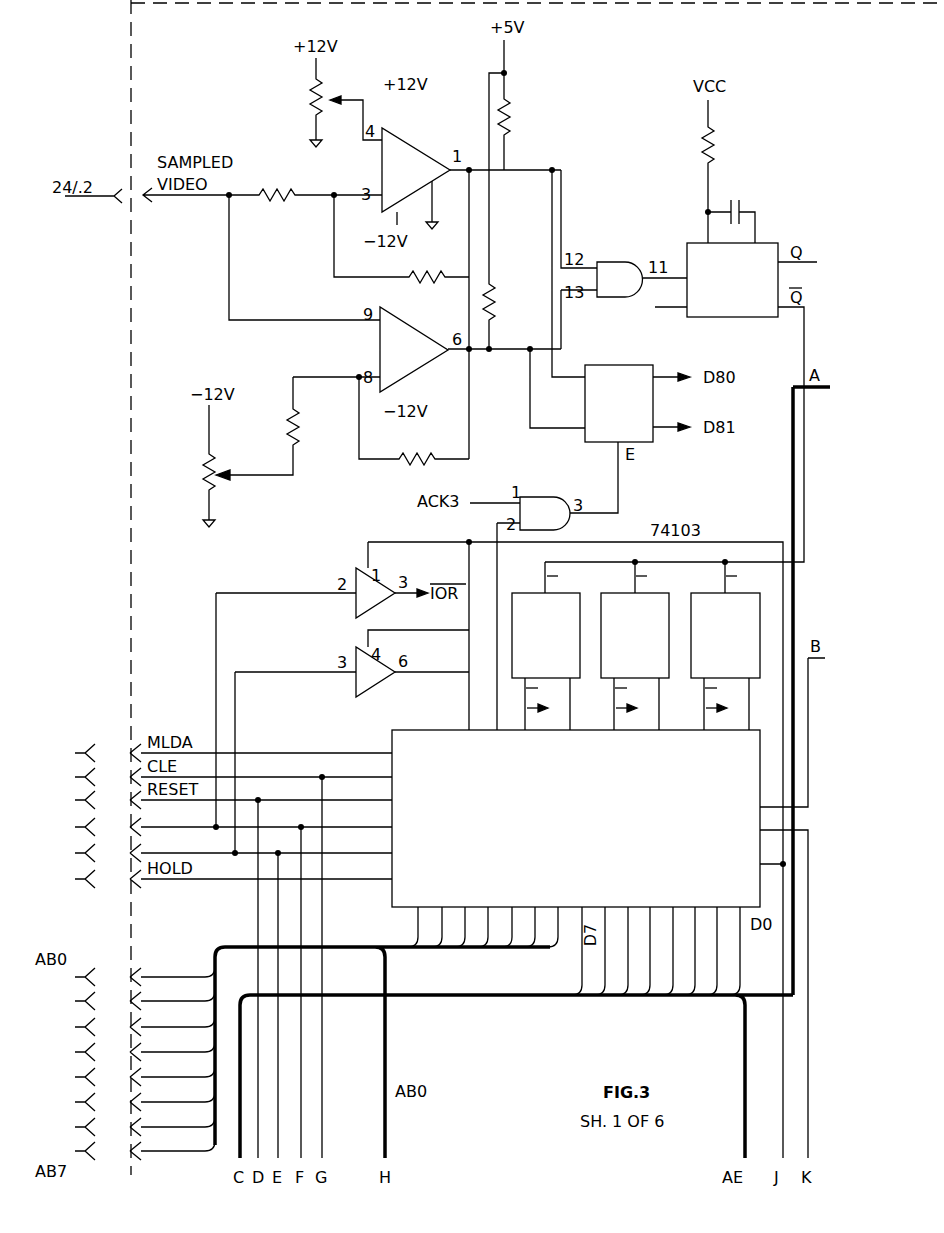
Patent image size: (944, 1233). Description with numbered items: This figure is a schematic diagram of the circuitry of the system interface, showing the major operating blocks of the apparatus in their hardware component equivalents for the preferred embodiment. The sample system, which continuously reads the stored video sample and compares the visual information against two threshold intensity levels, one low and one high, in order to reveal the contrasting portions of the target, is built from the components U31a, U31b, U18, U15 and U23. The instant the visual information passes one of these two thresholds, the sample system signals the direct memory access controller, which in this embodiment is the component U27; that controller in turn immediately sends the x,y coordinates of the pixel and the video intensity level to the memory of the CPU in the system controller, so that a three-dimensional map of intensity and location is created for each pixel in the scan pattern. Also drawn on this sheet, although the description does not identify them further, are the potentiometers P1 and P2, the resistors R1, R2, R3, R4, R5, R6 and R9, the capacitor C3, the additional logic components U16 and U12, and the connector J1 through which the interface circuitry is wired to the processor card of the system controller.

The potentiometer 10K (offset adjust) P1 is at (325, 102).
The potentiometer 10K (offset adjust) P2 is at (228, 466).
The resistor 1M (feedback) R1 is at (427, 275).
The resistor 22K (input) R2 is at (276, 197).
The resistor 1M (feedback) R3 is at (417, 460).
The resistor 22K R4 is at (283, 426).
The resistor 560 (pull-up) R5 is at (523, 116).
The resistor 560 (pull-up) R6 is at (503, 310).
The resistor 18K (timing) R9 is at (726, 145).
The capacitor 100PF (timing) C3 is at (750, 209).
The sample system component U31a is at (416, 170).
The sample system component U31b is at (414, 349).
The sample system component U18 is at (581, 380).
The sample system component U15 is at (732, 291).
The sample system component U23 is at (619, 403).
The 74103 flip-flop U16 is at (637, 652).
The 7404 inverter U12 is at (349, 637).
The DMA controller component U27 is at (576, 818).
The connector to 8085 card J1 is at (91, 890).